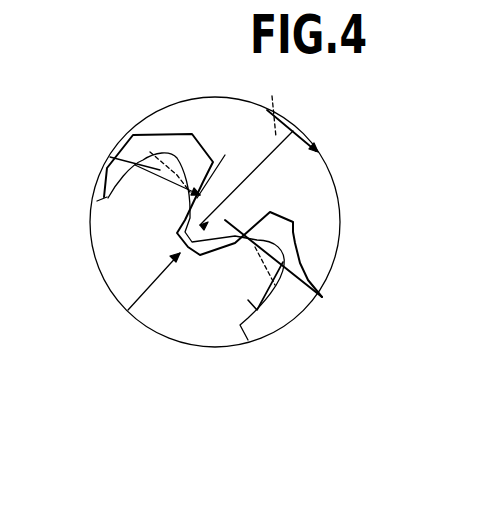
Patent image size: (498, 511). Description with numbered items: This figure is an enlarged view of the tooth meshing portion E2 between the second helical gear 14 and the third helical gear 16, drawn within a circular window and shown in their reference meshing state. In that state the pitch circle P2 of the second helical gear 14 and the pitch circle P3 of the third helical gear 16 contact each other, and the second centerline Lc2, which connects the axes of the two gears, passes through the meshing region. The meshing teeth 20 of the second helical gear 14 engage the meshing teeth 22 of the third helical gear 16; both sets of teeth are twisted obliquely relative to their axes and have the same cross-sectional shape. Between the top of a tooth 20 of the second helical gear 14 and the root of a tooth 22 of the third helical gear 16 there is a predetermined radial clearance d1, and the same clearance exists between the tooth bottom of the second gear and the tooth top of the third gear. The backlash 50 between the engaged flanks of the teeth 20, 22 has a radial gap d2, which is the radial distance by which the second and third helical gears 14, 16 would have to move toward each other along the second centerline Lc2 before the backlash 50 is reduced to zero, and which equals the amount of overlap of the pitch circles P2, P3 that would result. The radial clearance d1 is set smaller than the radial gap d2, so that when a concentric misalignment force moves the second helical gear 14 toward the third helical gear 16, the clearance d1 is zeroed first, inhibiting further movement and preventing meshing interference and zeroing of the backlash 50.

The tooth meshing portion E2 is at (122, 112).
The second centerline Lc2 is at (273, 105).
The second helical gear 14 is at (328, 146).
The third helical gear 16 is at (108, 295).
The meshing teeth 20 is at (232, 243).
The meshing teeth 22 is at (136, 182).
The backlash 50 is at (222, 250).
The pitch circle P2 is at (324, 295).
The pitch circle P3 is at (296, 250).
The radial clearance d1 is at (231, 210).
The radial gap d2 is at (180, 184).